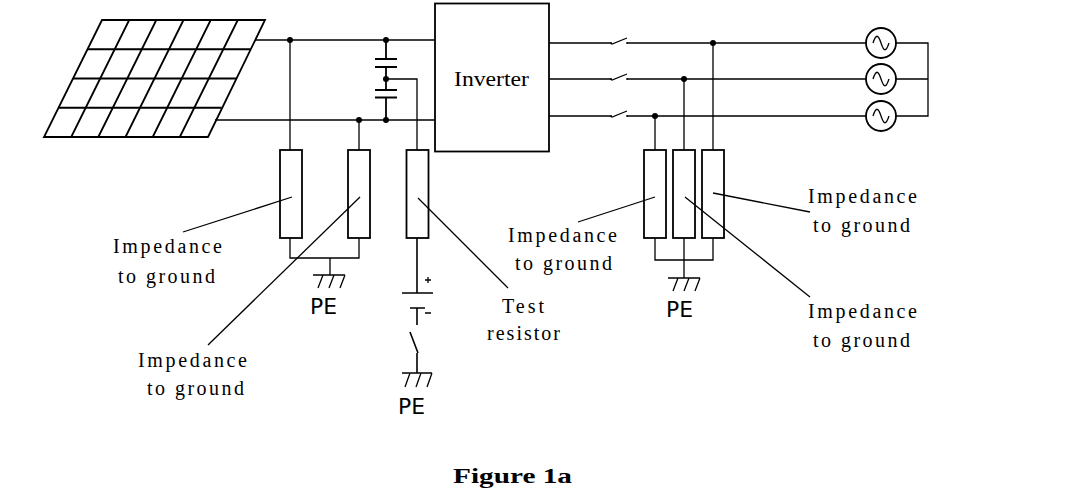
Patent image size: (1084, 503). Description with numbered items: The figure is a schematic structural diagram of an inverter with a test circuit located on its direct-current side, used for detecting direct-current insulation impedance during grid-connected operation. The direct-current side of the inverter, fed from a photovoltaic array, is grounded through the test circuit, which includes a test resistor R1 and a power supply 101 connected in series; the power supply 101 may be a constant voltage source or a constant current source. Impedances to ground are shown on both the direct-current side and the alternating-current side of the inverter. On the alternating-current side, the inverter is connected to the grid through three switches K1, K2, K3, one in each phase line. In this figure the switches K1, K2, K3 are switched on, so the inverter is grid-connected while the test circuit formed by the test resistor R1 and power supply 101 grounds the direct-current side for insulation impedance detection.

The power supply 101 is at (436, 312).
The test resistor R1 is at (431, 194).
The switch K1 is at (609, 31).
The switch K2 is at (609, 67).
The switch K3 is at (609, 104).